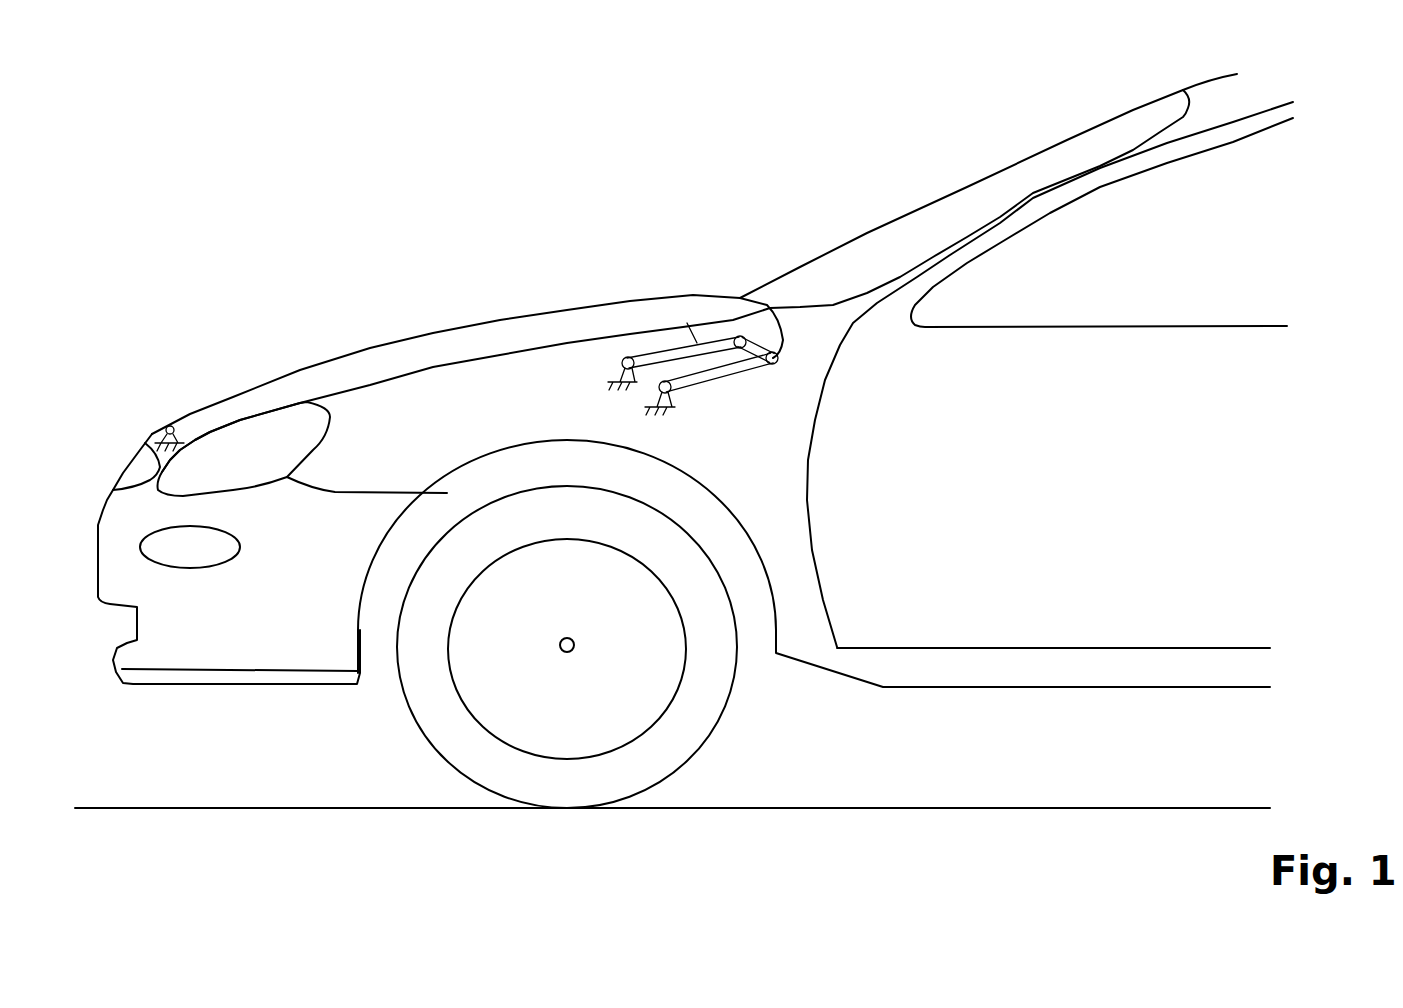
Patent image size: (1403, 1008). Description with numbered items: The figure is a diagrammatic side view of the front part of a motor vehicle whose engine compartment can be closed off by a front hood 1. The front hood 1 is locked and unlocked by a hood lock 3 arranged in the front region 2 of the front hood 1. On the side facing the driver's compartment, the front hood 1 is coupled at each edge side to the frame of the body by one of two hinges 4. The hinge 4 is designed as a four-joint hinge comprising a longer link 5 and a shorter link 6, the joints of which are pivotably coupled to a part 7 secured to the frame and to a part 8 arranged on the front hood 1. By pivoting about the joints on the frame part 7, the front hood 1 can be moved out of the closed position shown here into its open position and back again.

The front hood 1 is at (432, 348).
The front region 2 is at (183, 425).
The hood lock 3 is at (157, 423).
The hinge 4 is at (592, 377).
The longer link 5 is at (660, 358).
The shorter link 6 is at (743, 367).
The frame part 7 is at (703, 391).
The hood part 8 is at (703, 330).